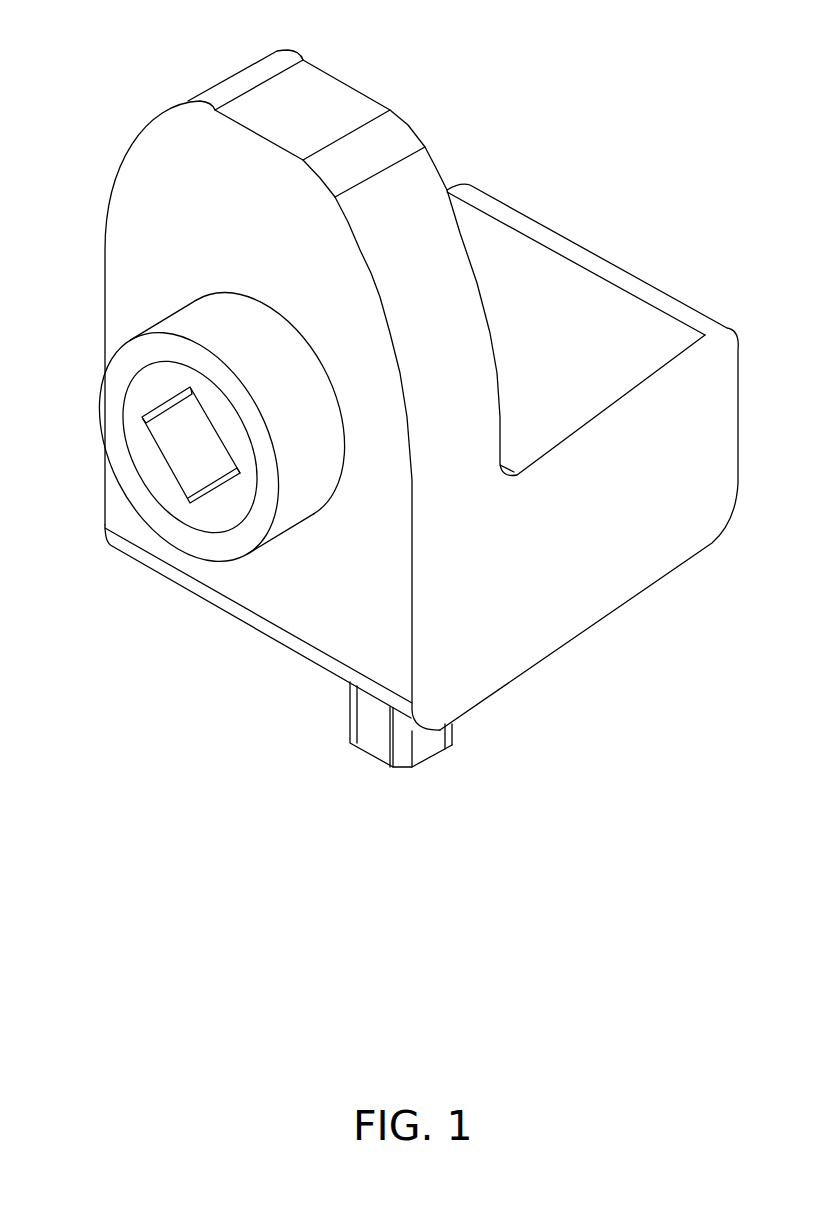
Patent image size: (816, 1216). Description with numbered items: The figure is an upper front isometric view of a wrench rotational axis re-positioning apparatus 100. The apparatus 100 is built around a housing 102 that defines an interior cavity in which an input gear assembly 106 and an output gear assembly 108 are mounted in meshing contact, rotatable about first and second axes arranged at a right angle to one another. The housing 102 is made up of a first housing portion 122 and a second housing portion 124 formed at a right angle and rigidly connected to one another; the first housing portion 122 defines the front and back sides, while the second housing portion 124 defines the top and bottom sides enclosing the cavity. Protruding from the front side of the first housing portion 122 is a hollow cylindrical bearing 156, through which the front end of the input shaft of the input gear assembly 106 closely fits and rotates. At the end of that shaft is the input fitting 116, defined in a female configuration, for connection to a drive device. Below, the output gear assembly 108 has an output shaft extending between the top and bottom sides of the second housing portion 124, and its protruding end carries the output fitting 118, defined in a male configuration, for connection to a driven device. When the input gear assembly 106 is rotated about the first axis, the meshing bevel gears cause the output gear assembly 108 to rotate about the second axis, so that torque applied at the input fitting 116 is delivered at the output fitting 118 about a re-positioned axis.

The wrench rotational axis re-positioning apparatus 100 is at (595, 68).
The housing 102 is at (155, 130).
The input gear assembly 106 is at (217, 513).
The output gear assembly 108 is at (433, 752).
The input fitting 116 is at (155, 462).
The output fitting 118 is at (375, 743).
The first housing portion 122 is at (425, 175).
The second housing portion 124 is at (663, 558).
The hollow cylindrical bearing 156 is at (285, 530).